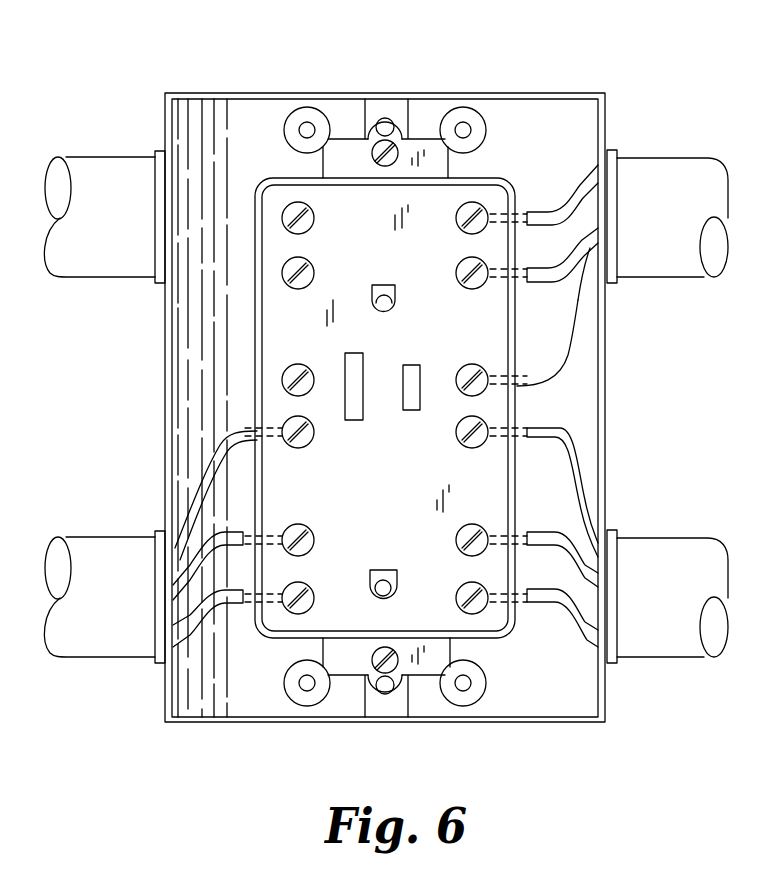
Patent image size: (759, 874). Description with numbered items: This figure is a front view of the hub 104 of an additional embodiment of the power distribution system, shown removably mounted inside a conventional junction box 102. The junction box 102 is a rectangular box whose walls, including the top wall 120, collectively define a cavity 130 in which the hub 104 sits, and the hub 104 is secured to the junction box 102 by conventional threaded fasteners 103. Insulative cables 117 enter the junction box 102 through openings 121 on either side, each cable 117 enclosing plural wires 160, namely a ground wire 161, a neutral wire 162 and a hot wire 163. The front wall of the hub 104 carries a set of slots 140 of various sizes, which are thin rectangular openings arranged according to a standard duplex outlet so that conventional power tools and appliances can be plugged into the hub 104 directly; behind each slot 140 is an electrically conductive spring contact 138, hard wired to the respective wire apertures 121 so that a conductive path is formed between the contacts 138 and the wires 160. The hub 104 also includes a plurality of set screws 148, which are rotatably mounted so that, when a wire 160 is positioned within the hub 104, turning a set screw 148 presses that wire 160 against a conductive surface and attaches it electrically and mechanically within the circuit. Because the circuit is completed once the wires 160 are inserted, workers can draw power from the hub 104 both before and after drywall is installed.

The junction box 102 is at (291, 93).
The threaded fasteners 103 is at (398, 148).
The hub 104 is at (280, 481).
The insulative cables 117 is at (667, 157).
The top wall 120 is at (180, 90).
The openings 121 is at (610, 529).
The cavity 130 is at (240, 118).
The spring contacts 138 is at (257, 431).
The slots 140 is at (346, 357).
The set screws 148 is at (478, 212).
The wires 160 is at (560, 275).
The ground wire 161 is at (566, 356).
The neutral wire 162 is at (588, 255).
The hot wire 163 is at (586, 180).